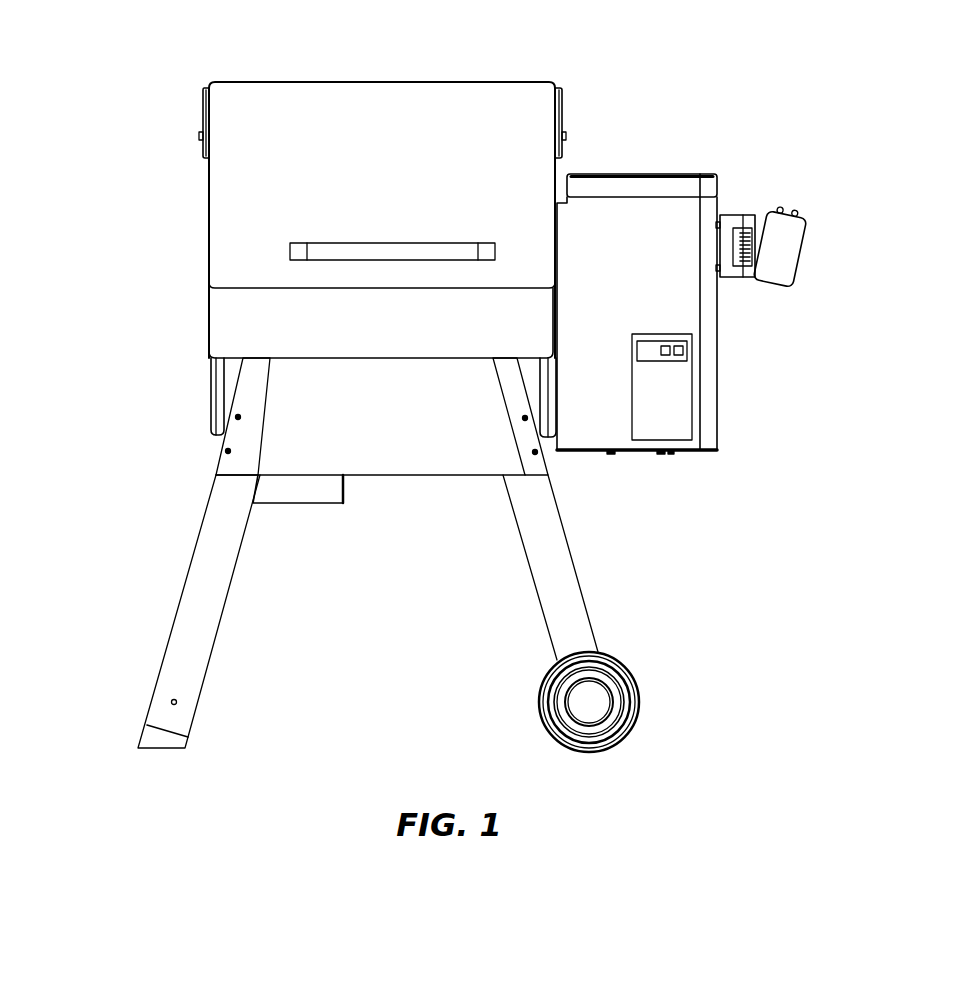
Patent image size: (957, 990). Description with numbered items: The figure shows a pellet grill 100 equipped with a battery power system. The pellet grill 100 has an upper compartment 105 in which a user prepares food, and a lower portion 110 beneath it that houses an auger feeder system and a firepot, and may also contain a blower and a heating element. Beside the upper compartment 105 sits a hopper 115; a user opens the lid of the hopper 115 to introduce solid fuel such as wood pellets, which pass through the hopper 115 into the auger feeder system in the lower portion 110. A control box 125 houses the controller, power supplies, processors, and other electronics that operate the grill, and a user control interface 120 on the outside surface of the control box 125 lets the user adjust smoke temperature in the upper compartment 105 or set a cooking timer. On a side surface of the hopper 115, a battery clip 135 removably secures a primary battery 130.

The pellet grill 100 is at (636, 74).
The upper compartment 105 is at (470, 82).
The lower portion 110 is at (212, 410).
The hopper 115 is at (705, 176).
The user control interface 120 is at (690, 343).
The control box 125 is at (675, 418).
The primary battery 130 is at (803, 253).
The battery clip 135 is at (745, 213).